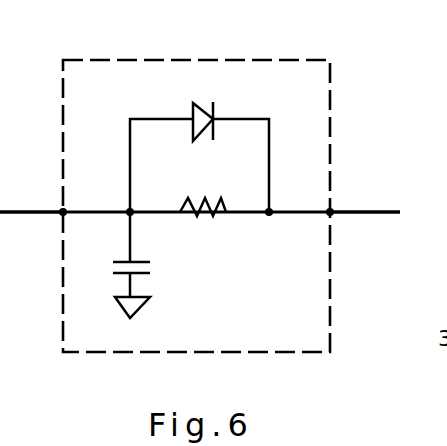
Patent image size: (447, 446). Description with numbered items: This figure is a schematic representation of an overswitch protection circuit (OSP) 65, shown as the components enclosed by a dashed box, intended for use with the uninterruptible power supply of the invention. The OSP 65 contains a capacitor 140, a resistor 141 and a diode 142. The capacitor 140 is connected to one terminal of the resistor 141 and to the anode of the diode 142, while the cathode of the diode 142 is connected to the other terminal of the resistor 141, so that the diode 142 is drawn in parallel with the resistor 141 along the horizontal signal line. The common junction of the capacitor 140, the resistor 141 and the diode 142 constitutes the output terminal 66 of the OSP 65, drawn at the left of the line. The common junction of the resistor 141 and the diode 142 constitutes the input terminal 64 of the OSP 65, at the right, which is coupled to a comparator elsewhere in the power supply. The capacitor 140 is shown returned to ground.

The overswitch protection circuit 65 is at (209, 60).
The diode 142 is at (193, 113).
The resistor 141 is at (210, 213).
The capacitor 140 is at (143, 275).
The output terminal 66 is at (26, 210).
The input terminal 64 is at (365, 211).